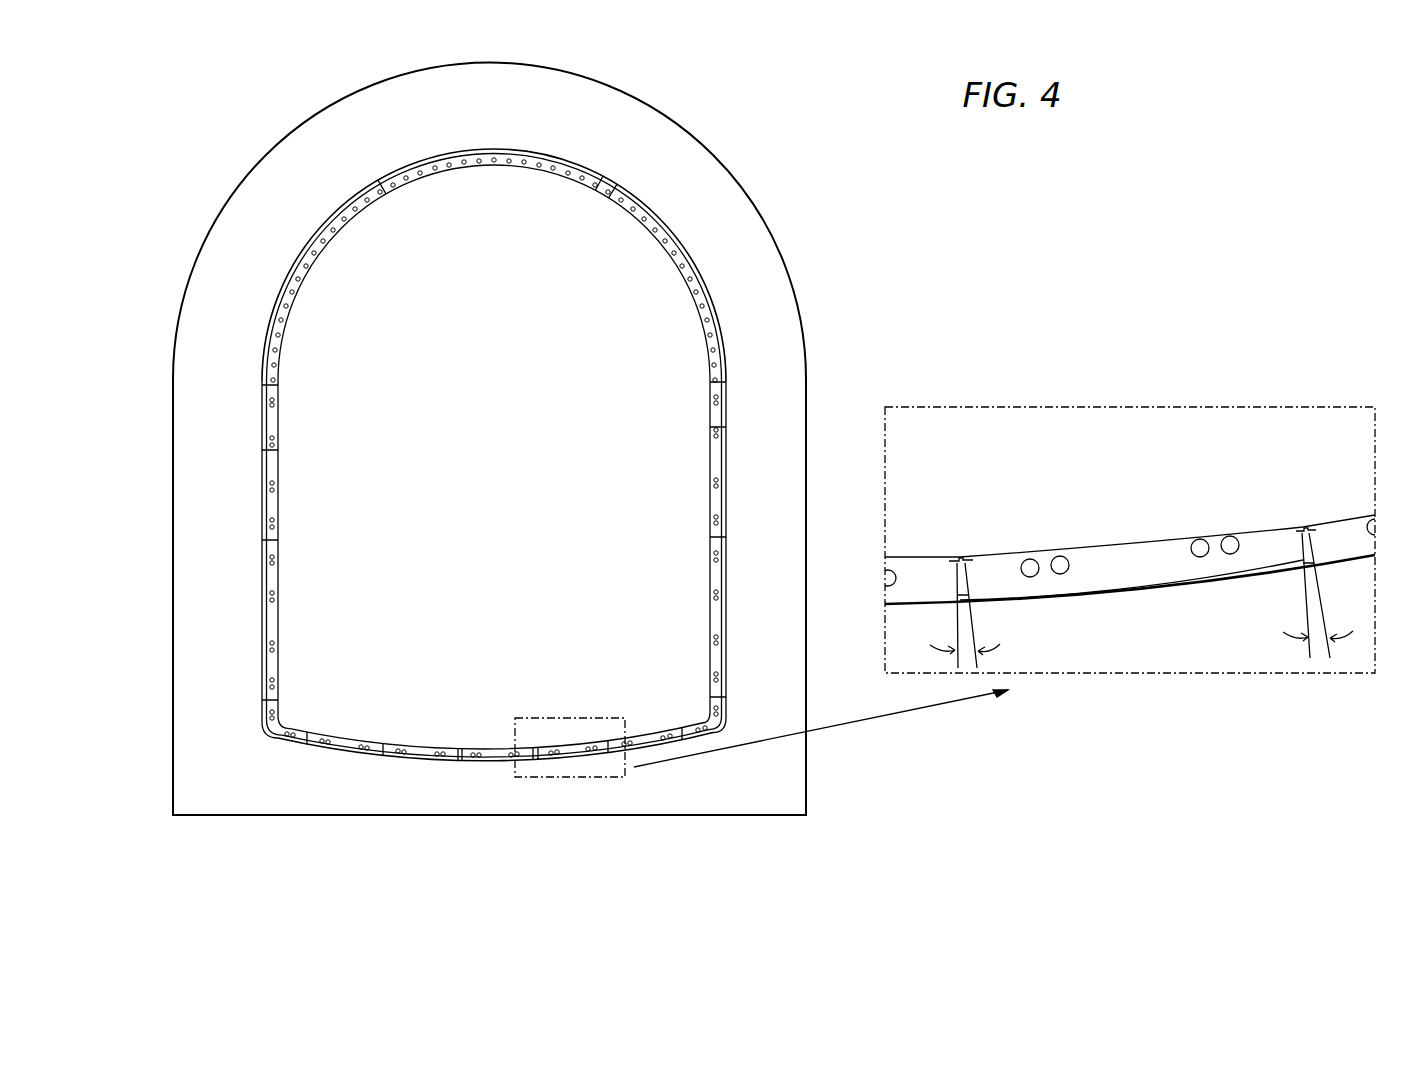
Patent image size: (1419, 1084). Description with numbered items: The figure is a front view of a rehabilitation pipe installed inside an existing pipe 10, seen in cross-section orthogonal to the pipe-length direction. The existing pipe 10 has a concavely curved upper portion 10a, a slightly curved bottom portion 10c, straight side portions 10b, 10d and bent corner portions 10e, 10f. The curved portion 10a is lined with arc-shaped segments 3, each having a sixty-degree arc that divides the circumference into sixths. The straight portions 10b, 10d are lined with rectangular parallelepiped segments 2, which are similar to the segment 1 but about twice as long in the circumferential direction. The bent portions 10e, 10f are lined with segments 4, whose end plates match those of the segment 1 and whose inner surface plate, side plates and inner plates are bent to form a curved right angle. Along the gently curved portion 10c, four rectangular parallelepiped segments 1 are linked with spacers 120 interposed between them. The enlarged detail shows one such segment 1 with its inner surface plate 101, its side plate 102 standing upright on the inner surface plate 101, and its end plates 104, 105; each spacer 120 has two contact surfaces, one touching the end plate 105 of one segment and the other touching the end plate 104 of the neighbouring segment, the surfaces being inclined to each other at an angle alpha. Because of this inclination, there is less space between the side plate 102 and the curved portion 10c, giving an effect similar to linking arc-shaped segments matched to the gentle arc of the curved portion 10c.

The segment 1 is at (343, 746).
The rectangular parallelepiped segment 2 is at (278, 498).
The arc-shaped segment 3 is at (491, 172).
The segment 4 is at (302, 733).
The existing pipe 10 is at (735, 180).
The curved portion 10a is at (588, 183).
The straight portion 10b is at (726, 423).
The curved portion 10c is at (485, 745).
The straight portion 10d is at (262, 452).
The bent portion 10e is at (713, 729).
The bent portion 10f is at (263, 729).
The inner surface plate 101 is at (1087, 546).
The side plate 102 is at (1144, 566).
The end plate 104 is at (1298, 544).
The end plate 105 is at (966, 577).
The spacer 120 is at (383, 753).